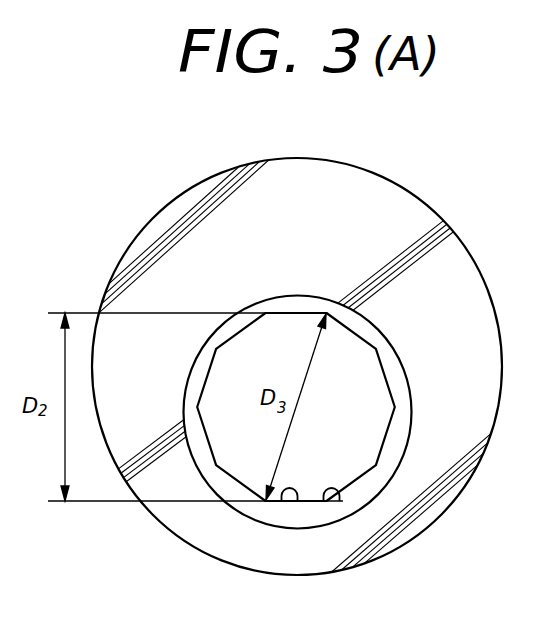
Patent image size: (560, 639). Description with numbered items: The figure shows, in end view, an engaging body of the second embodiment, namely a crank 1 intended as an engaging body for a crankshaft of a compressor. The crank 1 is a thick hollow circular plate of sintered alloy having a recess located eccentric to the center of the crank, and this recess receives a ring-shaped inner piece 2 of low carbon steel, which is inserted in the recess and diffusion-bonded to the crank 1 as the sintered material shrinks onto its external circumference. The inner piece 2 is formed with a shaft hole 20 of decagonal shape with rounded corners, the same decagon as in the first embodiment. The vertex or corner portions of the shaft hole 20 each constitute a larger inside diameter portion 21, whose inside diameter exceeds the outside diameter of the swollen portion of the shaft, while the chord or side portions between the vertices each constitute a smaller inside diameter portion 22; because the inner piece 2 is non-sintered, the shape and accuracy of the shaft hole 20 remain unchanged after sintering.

The crank 1 is at (325, 183).
The ring-shaped inner piece 2 is at (373, 337).
The shaft hole 20 is at (347, 431).
The larger inside diameter portion 21 is at (345, 492).
The smaller inside diameter portion 22 is at (289, 490).